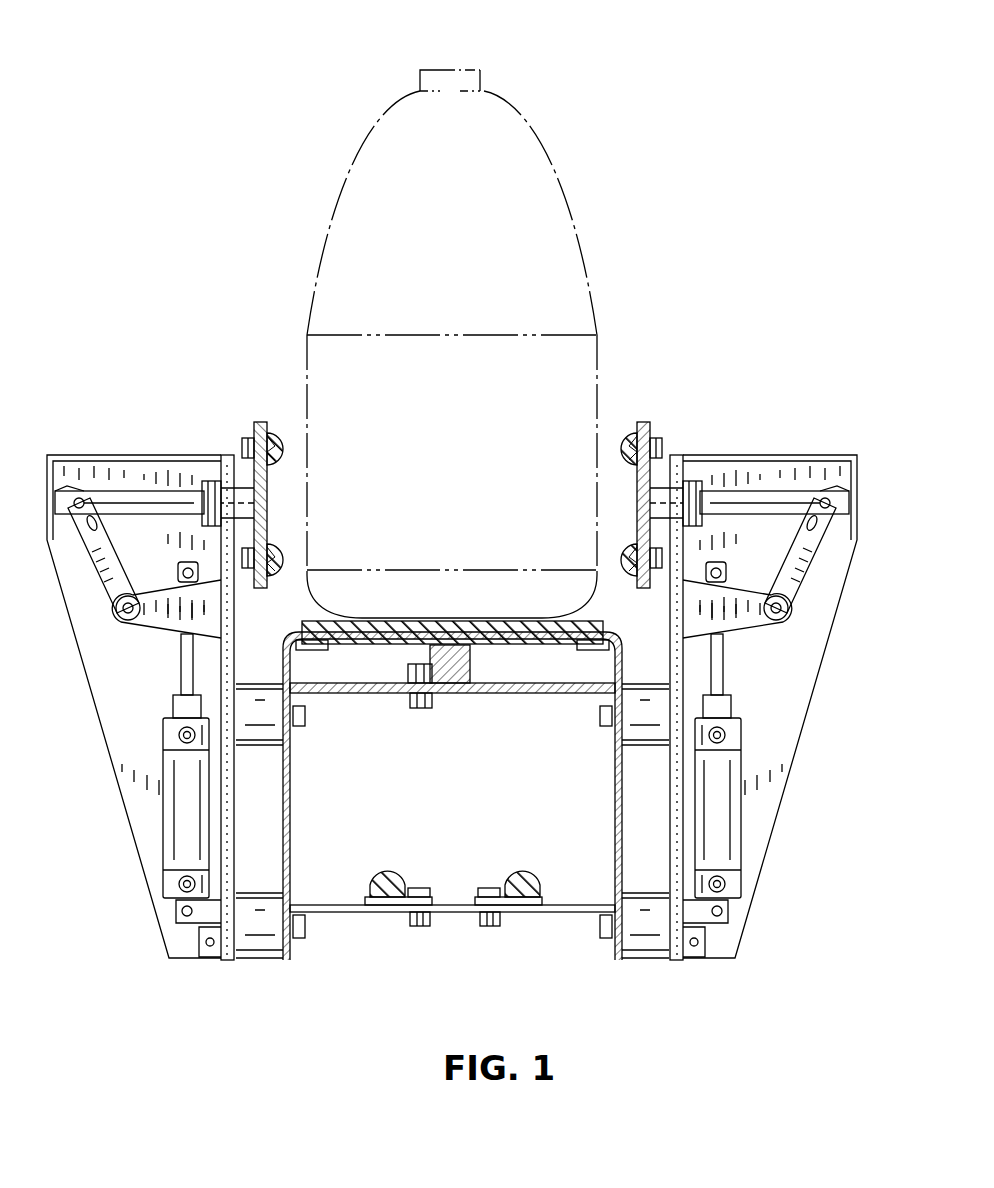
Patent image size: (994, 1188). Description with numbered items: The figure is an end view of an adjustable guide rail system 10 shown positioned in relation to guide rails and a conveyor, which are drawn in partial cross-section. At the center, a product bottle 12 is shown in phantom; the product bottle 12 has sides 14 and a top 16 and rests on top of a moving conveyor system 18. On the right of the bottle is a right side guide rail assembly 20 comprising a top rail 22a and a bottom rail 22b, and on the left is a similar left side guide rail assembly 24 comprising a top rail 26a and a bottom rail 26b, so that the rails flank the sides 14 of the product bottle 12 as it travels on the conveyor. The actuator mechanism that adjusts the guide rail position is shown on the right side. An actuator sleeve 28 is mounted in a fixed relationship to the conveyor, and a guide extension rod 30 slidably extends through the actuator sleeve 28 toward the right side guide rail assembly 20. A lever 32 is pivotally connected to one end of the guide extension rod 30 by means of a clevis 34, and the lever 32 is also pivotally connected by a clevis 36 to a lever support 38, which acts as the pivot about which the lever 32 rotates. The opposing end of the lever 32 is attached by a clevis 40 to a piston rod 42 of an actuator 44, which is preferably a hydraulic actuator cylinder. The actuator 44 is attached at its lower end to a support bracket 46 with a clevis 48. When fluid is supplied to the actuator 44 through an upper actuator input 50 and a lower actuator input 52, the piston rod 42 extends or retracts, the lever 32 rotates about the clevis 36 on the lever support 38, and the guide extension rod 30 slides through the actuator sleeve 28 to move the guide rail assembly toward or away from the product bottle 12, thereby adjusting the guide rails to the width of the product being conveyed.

The adjustable guide rail system 10 is at (142, 105).
The product bottle 12 is at (595, 221).
The sides 14 is at (606, 370).
The top 16 is at (448, 70).
The moving conveyor system 18 is at (396, 646).
The right side guide rail assembly 20 is at (674, 427).
The top rail 22a is at (618, 452).
The bottom rail 22b is at (618, 556).
The left side guide rail assembly 24 is at (236, 414).
The top rail 26a is at (289, 456).
The bottom rail 26b is at (289, 560).
The actuator sleeve 28 is at (693, 470).
The guide extension rod 30 is at (768, 498).
The lever 32 is at (798, 577).
The clevis 34 is at (828, 510).
The clevis 36 is at (782, 614).
The lever support 38 is at (742, 626).
The clevis 40 is at (718, 573).
The piston rod 42 is at (722, 668).
The actuator 44 is at (726, 850).
The support bracket 46 is at (697, 915).
The clevis 48 is at (722, 912).
The upper actuator input 50 is at (720, 735).
The lower actuator input 52 is at (720, 885).